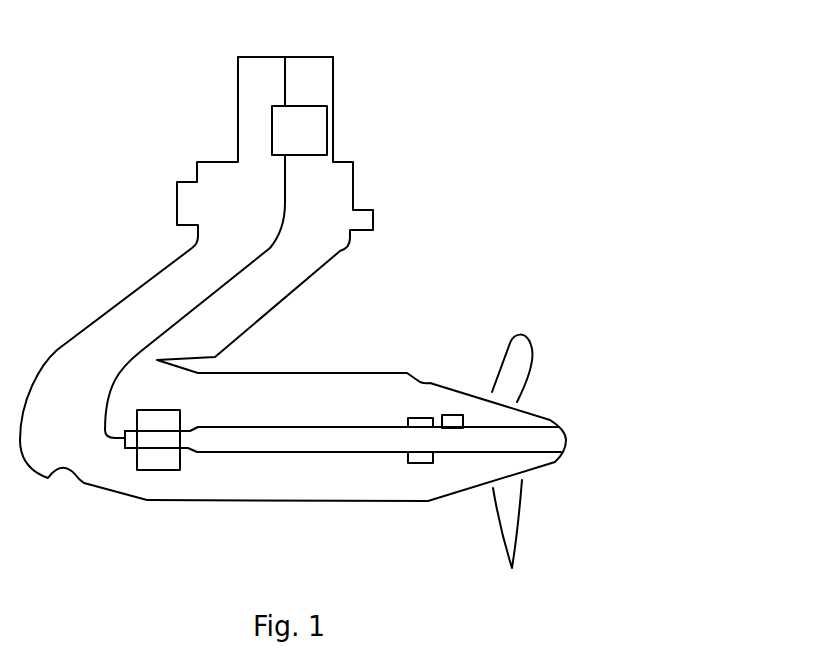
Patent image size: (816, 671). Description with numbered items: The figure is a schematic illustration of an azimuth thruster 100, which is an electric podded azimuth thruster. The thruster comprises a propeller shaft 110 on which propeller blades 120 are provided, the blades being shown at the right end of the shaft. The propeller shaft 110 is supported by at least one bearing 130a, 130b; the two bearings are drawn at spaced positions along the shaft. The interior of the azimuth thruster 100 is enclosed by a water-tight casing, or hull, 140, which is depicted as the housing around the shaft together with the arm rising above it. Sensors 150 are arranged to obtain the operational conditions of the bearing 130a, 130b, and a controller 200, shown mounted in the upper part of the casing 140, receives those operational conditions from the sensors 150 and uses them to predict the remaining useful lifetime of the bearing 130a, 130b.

The azimuth thruster 100 is at (538, 50).
The propeller shaft 110 is at (287, 437).
The propeller blades 120 is at (520, 370).
The bearing 130a is at (165, 457).
The bearing 130b is at (422, 457).
The water-tight casing 140 is at (133, 292).
The sensors 150 is at (457, 425).
The controller 200 is at (303, 131).